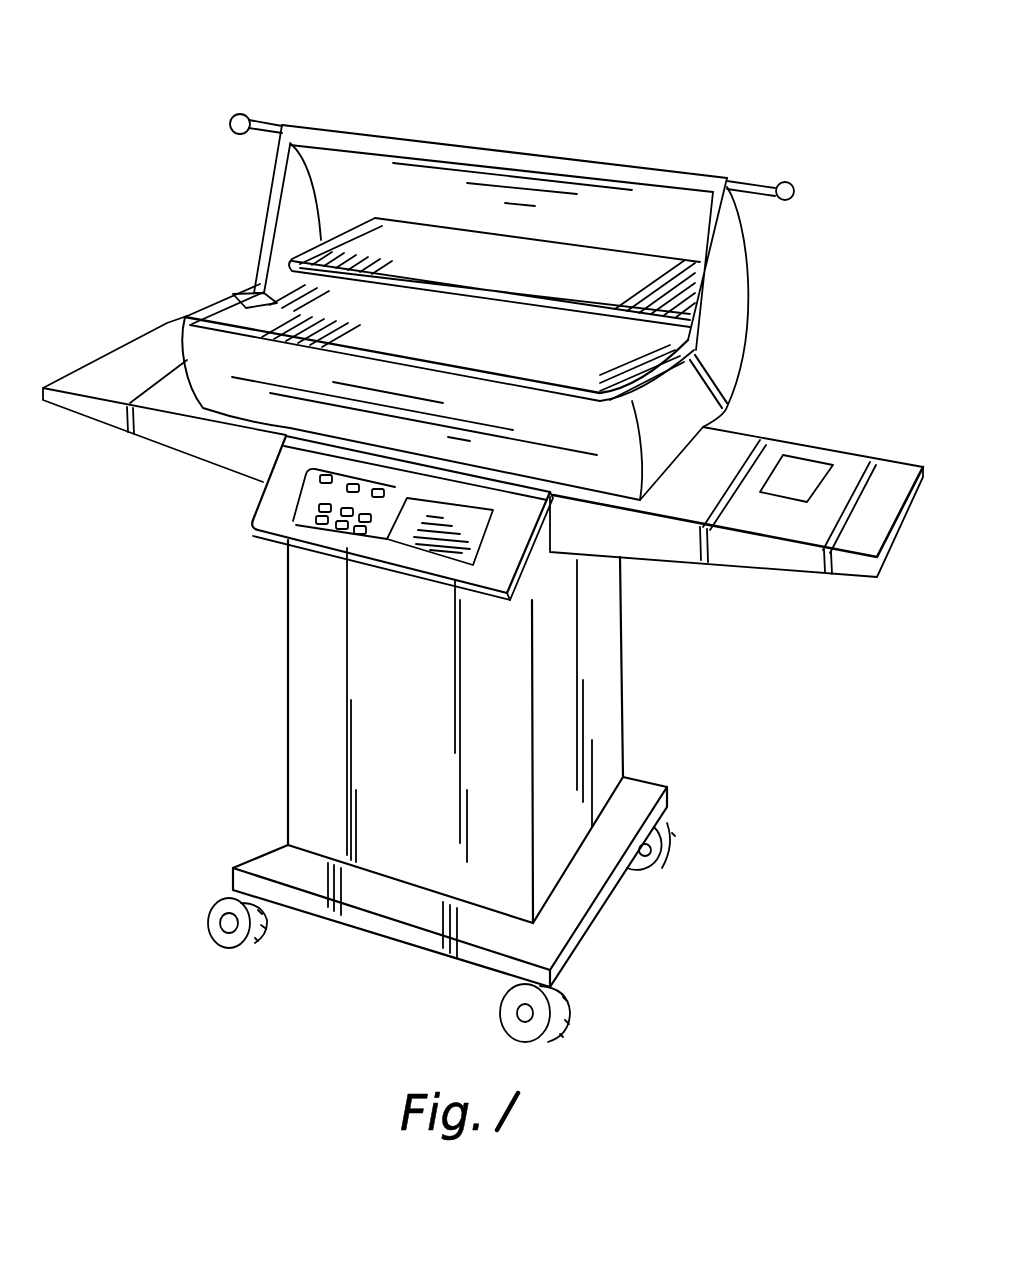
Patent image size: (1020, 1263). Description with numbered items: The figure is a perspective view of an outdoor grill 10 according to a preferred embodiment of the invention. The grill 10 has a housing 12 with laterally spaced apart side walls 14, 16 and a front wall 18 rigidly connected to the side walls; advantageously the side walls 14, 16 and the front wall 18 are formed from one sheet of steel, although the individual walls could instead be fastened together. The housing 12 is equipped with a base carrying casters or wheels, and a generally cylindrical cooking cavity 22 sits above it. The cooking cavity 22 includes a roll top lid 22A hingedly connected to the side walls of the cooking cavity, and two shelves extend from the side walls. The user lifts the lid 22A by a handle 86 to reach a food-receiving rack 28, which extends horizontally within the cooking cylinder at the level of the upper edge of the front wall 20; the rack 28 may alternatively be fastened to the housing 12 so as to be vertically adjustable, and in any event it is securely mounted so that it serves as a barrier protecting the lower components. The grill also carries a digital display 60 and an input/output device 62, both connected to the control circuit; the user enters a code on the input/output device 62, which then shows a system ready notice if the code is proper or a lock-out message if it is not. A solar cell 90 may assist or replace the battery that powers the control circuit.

The outdoor grill 10 is at (421, 110).
The housing 12 is at (280, 790).
The side wall 14 is at (288, 631).
The side wall 16 is at (622, 707).
The front wall 18 is at (327, 681).
The upper edge of the front wall 20 is at (687, 338).
The cooking cavity 22 is at (247, 283).
The roll top lid 22A is at (648, 166).
The food-receiving rack 28 is at (237, 293).
The digital display 60 is at (323, 482).
The input/output device 62 is at (312, 517).
The handle 86 is at (762, 184).
The solar cell 90 is at (820, 463).